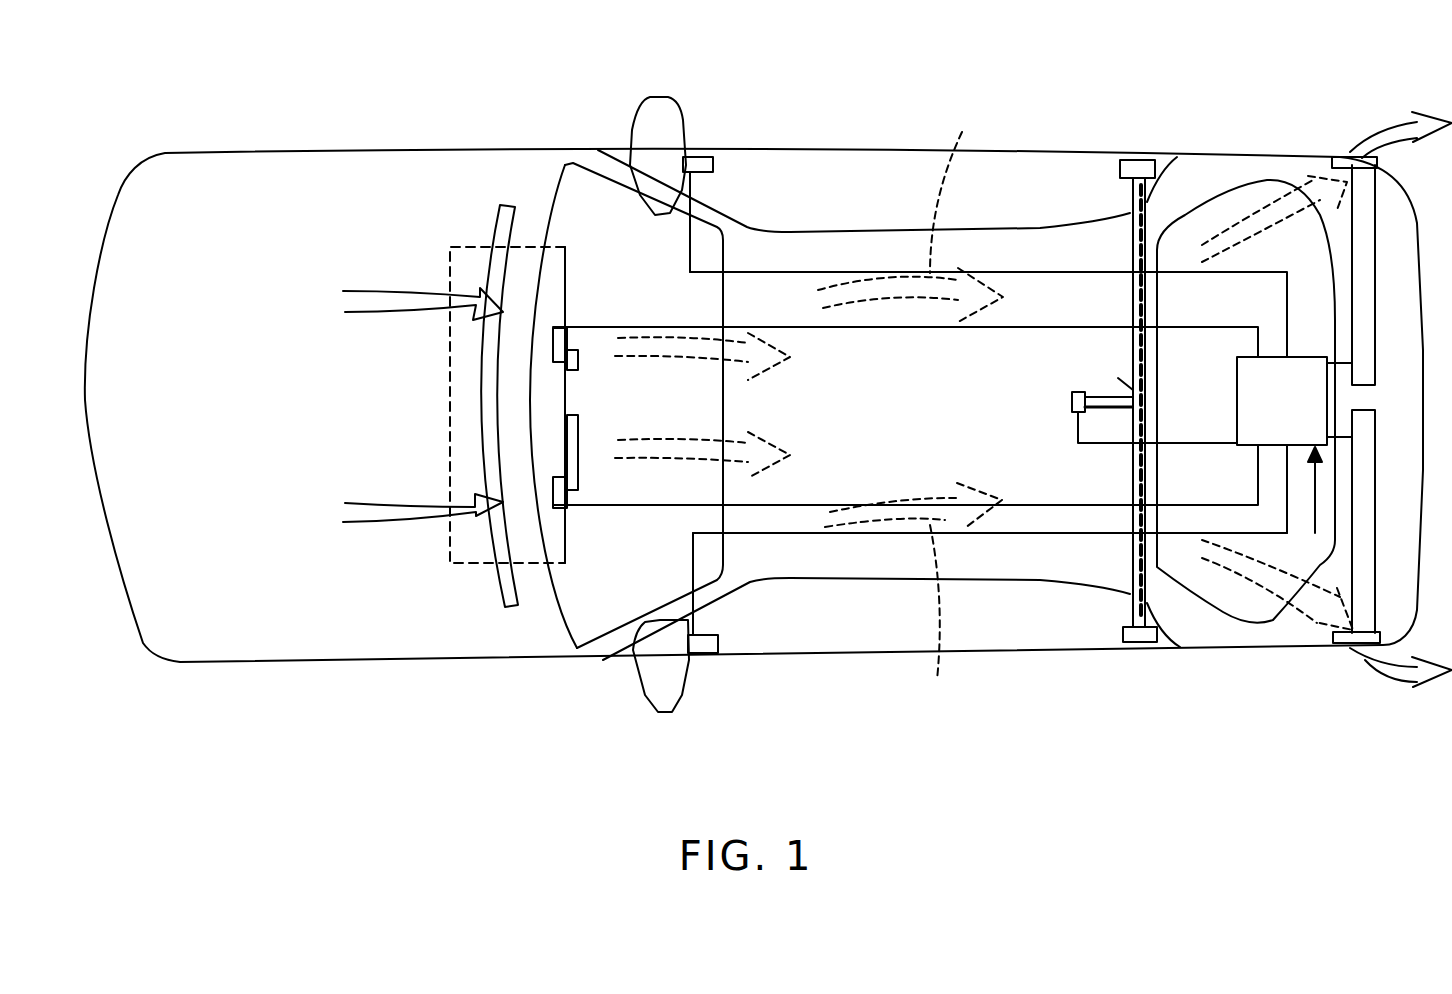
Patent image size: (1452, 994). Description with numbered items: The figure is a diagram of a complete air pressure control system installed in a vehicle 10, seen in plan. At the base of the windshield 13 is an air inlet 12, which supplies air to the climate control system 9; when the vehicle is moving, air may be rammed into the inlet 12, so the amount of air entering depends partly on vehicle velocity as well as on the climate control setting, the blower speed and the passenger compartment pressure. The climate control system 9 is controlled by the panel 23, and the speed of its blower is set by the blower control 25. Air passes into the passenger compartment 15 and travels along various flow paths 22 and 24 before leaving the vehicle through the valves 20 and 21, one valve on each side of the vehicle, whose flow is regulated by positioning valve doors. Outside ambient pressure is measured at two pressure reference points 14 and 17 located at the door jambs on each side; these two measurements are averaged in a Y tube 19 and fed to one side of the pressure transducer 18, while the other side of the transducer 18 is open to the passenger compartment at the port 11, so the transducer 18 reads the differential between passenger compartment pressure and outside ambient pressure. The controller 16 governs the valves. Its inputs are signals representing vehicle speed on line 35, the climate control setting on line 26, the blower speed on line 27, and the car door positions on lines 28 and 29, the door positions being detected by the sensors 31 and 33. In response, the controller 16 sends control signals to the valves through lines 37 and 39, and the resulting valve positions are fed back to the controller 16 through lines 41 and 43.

The climate control system 9 is at (540, 378).
The vehicle 10 is at (252, 110).
The passenger compartment pressure port 11 is at (1050, 405).
The air inlet 12 is at (497, 222).
The windshield 13 is at (580, 208).
The pressure reference point 14 is at (1135, 643).
The passenger compartment 15 is at (787, 287).
The controller 16 is at (1267, 372).
The pressure reference point 17 is at (1135, 160).
The pressure transducer 18 is at (1068, 412).
The Y tube 19 is at (1118, 380).
The valve 20 is at (1342, 643).
The valve 21 is at (1340, 160).
The flow path 22 is at (961, 183).
The panel 23 is at (577, 447).
The flow path 24 is at (934, 623).
The blower control 25 is at (578, 353).
The line 26 is at (753, 503).
The line 27 is at (790, 330).
The line 28 is at (753, 535).
The line 29 is at (1017, 270).
The sensor 31 is at (703, 152).
The sensor 33 is at (700, 653).
The line 35 is at (1313, 498).
The line 37 is at (1350, 226).
The line 39 is at (1353, 553).
The line 41 is at (1383, 195).
The line 43 is at (1373, 655).